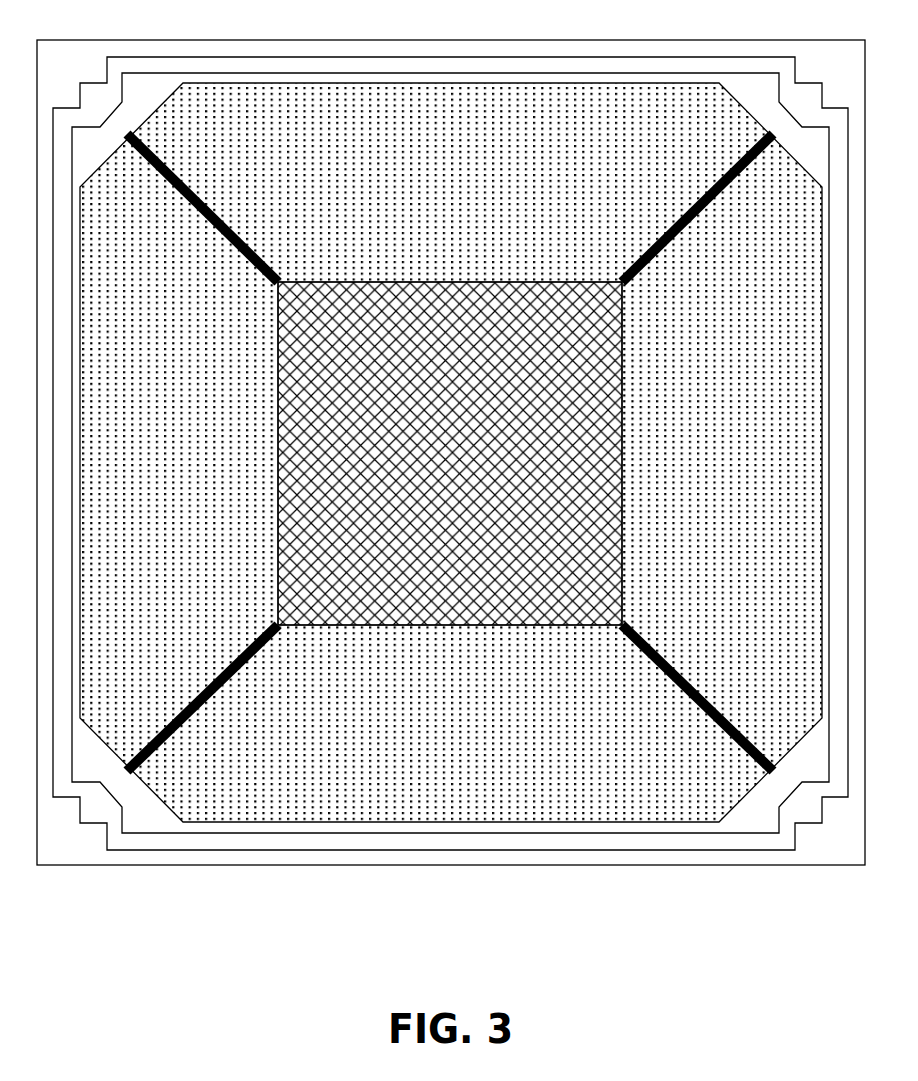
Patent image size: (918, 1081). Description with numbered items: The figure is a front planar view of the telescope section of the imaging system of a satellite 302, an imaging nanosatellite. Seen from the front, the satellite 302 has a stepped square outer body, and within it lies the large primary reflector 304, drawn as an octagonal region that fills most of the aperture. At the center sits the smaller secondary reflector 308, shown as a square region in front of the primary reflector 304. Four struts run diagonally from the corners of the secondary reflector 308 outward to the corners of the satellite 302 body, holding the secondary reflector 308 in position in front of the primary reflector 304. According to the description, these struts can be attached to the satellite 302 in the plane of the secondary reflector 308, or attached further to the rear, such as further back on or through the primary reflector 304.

The satellite 302 is at (450, 39).
The primary reflector 304 is at (587, 170).
The secondary reflector 308 is at (430, 282).